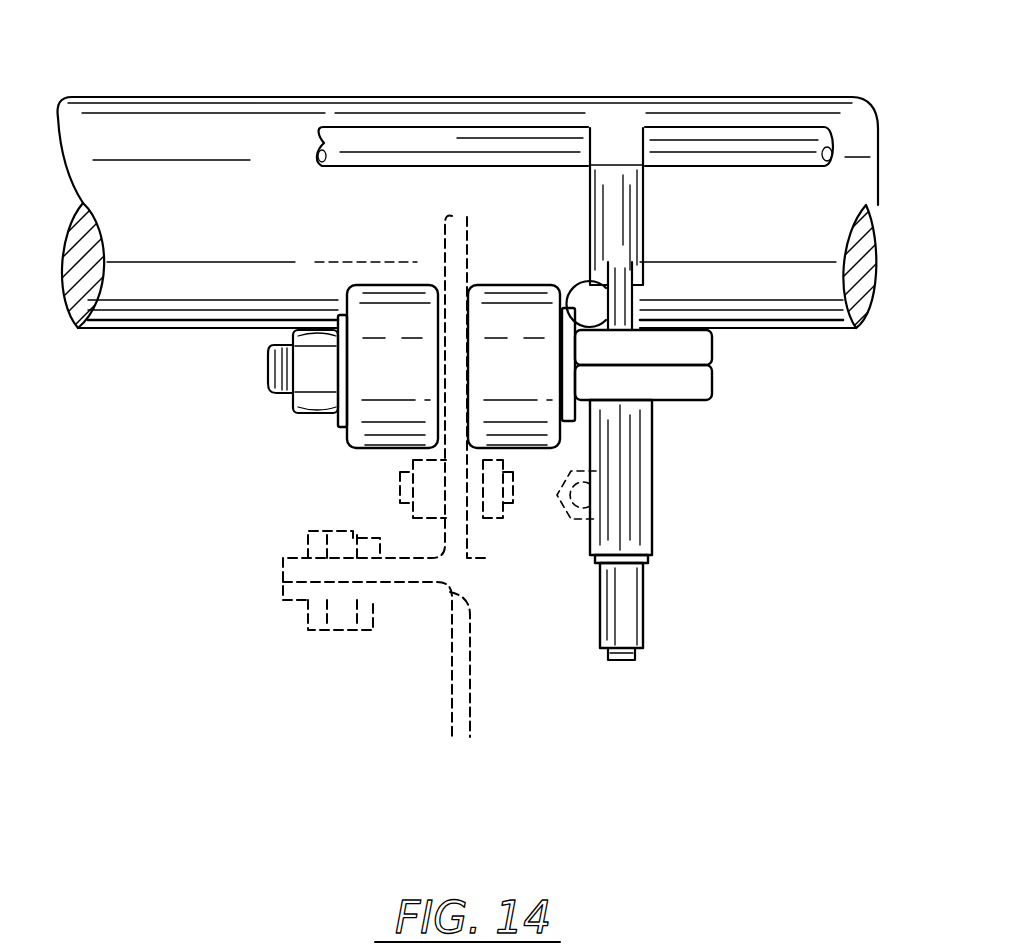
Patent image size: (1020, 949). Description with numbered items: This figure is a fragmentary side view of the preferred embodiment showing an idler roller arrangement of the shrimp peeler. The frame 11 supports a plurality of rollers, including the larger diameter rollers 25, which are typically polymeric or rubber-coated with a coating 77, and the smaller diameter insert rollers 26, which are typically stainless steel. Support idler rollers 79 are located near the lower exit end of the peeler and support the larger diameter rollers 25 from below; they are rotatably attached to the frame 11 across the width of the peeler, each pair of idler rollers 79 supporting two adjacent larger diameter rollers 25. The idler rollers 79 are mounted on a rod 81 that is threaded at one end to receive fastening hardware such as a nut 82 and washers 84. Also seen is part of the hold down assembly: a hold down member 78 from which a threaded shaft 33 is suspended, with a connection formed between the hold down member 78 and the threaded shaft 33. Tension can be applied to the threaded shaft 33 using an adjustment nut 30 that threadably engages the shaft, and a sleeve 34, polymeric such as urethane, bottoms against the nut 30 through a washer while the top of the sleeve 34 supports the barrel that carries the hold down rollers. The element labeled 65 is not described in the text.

The coating 77 is at (186, 141).
The slot / rail 65 is at (612, 148).
The smaller diameter insert roller 26 is at (856, 96).
The hold down member 78 is at (626, 216).
The larger diameter roller 25 is at (62, 310).
The rod 81 is at (270, 366).
The nut 82 is at (313, 405).
The idler roller 79 is at (358, 449).
The washer 84 is at (574, 424).
The sleeve 34 is at (637, 482).
The adjustment nut 30 is at (643, 598).
The threaded shaft 33 is at (628, 661).
The frame 11 is at (450, 630).